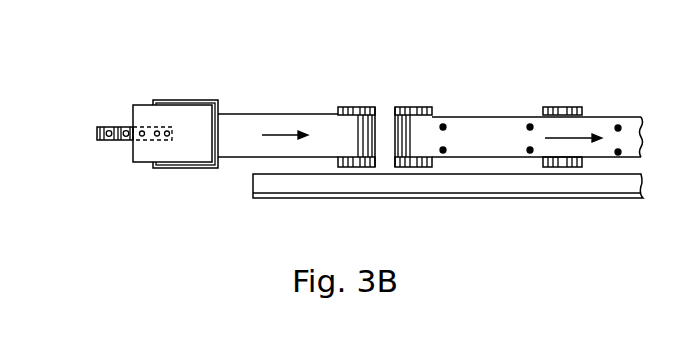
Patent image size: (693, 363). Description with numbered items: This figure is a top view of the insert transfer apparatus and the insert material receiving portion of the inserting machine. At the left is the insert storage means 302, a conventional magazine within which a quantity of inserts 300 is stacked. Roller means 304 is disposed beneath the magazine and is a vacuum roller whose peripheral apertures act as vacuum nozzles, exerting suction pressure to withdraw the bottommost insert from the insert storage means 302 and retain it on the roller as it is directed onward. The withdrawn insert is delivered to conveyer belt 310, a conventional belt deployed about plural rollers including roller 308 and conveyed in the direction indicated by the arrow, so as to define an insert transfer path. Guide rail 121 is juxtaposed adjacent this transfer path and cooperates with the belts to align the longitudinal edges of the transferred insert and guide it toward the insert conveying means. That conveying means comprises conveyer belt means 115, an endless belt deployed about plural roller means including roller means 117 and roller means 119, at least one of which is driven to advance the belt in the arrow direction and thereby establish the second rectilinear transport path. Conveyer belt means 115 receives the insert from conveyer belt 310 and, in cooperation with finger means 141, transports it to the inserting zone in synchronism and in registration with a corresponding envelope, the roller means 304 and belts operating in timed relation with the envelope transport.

The inserts 300 is at (206, 132).
The insert storage means 302 is at (163, 100).
The roller means 304 is at (123, 127).
The roller 308 is at (360, 107).
The conveyer belt 310 is at (245, 114).
The conveyer belt means 115 is at (467, 117).
The roller means 117 is at (402, 107).
The roller means 119 is at (563, 107).
The guide rail 121 is at (262, 185).
The finger means 141 is at (443, 127).